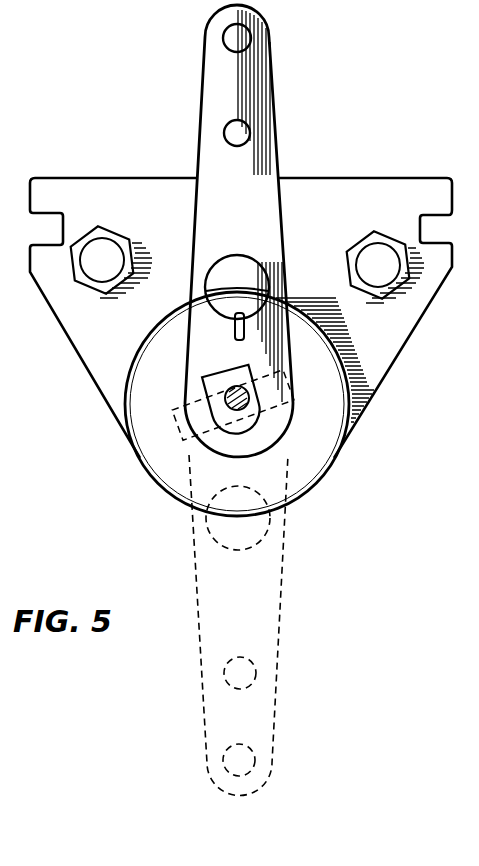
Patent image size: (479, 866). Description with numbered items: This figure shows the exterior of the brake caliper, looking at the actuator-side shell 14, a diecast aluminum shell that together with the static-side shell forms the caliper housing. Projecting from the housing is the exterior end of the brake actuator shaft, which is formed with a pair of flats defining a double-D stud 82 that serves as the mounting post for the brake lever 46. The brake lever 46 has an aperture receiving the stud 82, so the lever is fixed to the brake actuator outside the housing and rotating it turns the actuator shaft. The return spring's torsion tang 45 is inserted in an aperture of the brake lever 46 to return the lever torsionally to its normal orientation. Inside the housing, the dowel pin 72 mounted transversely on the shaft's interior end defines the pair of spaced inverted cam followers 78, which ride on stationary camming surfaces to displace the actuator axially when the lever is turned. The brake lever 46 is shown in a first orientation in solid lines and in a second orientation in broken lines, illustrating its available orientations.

The actuator-side shell 14 is at (63, 188).
The brake lever 46 is at (258, 103).
The torsion tang 45 is at (235, 337).
The dowel pin 72 is at (180, 378).
The inverted cam followers 78 is at (186, 405).
The stud 82 is at (213, 376).